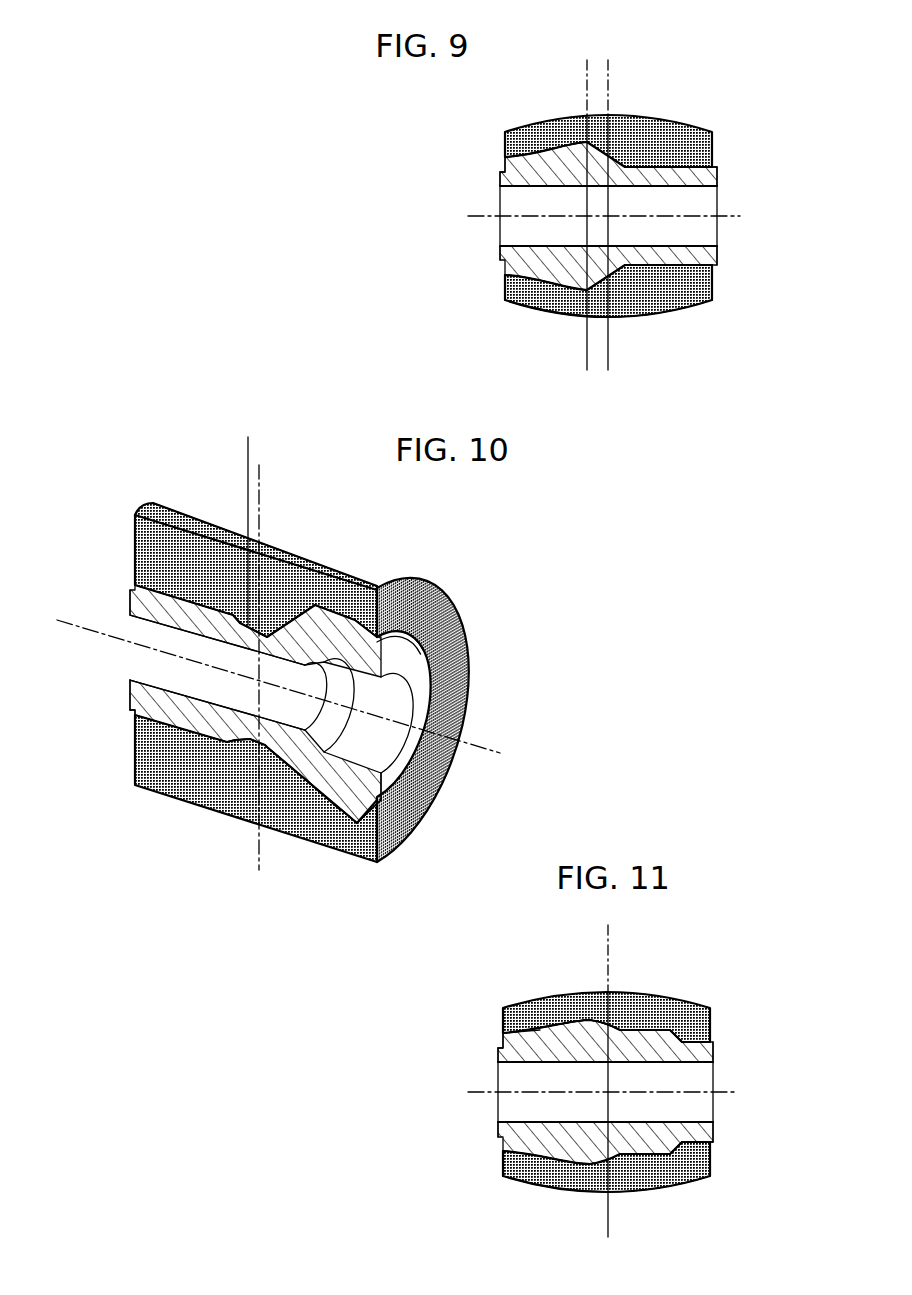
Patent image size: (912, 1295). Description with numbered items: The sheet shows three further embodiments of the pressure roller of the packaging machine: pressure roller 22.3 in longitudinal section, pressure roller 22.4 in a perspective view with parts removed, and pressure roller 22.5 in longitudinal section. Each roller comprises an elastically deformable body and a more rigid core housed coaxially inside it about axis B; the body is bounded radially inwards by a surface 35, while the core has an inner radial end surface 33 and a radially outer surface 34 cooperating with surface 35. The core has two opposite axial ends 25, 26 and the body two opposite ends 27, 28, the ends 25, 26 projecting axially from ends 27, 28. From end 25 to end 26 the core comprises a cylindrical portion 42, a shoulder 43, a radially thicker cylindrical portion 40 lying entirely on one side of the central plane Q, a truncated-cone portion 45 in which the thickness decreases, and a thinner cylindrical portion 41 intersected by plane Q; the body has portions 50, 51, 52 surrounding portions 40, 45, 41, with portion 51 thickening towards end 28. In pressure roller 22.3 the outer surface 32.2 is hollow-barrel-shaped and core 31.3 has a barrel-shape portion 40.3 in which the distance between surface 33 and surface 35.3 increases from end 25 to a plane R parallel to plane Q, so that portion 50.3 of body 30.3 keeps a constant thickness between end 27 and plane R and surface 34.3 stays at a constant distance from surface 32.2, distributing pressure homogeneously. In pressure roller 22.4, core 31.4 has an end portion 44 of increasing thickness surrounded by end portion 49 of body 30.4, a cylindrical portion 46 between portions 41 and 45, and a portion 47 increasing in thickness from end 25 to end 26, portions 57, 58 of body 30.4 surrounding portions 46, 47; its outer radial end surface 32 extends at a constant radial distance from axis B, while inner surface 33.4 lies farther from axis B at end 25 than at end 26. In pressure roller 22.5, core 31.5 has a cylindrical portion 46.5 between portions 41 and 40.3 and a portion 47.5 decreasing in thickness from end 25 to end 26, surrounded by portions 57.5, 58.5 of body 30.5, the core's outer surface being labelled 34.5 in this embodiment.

In FIG. 9, the pressure roller 22.3 is at (604, 216).
In FIG. 10, the pressure roller 22.4 is at (302, 660).
In FIG. 11, the pressure roller 22.5 is at (609, 1080).
In FIG. 9, the axial end of core 25 is at (477, 187).
In FIG. 10, the axial end of core 25 is at (389, 840).
In FIG. 11, the axial end of core 25 is at (477, 1062).
In FIG. 9, the axial end of core 26 is at (724, 172).
In FIG. 10, the axial end of core 26 is at (176, 738).
In FIG. 11, the axial end of core 26 is at (720, 1055).
In FIG. 9, the end of body 27 is at (495, 283).
In FIG. 10, the end of body 27 is at (399, 600).
In FIG. 11, the end of body 27 is at (495, 1162).
In FIG. 9, the end of body 28 is at (719, 283).
In FIG. 10, the end of body 28 is at (131, 550).
In FIG. 11, the end of body 28 is at (721, 1160).
In FIG. 9, the body 30.3 is at (698, 327).
In FIG. 10, the body 30.4 is at (308, 518).
In FIG. 11, the body 30.5 is at (731, 1197).
In FIG. 9, the core 31.3 is at (663, 168).
In FIG. 10, the core 31.4 is at (368, 834).
In FIG. 11, the core 31.5 is at (651, 1039).
In FIG. 10, the outer radial end surface 32 is at (176, 506).
In FIG. 9, the outer radial end surface 32.2 is at (618, 326).
In FIG. 11, the outer radial end surface 32.2 is at (556, 1209).
In FIG. 9, the inner radial end surface 33 is at (518, 240).
In FIG. 11, the inner radial end surface 33 is at (518, 1113).
In FIG. 10, the inner radial end surface 33.4 is at (412, 633).
In FIG. 10, the radially outer surface of core 34 is at (124, 697).
In FIG. 9, the radially outer surface of core 34.3 is at (553, 294).
In FIG. 11, the first outer ring portion 34.5 is at (565, 1011).
In FIG. 10, the radially inner surface of body 35 is at (157, 600).
In FIG. 9, the radially inner surface of body 35.3 is at (640, 251).
In FIG. 10, the core portion 40 is at (352, 636).
In FIG. 9, the barrel-shape portion of core 40.3 is at (542, 163).
In FIG. 11, the barrel-shape portion of core 40.3 is at (538, 1143).
In FIG. 9, the core portion 41 is at (638, 167).
In FIG. 10, the core portion 41 is at (193, 607).
In FIG. 11, the core portion 41 is at (692, 1134).
In FIG. 9, the cylindrical portion of core 42 is at (495, 177).
In FIG. 10, the cylindrical portion of core 42 is at (386, 796).
In FIG. 11, the cylindrical portion of core 42 is at (495, 1053).
In FIG. 9, the shoulder 43 is at (502, 160).
In FIG. 10, the shoulder 43 is at (339, 622).
In FIG. 11, the shoulder 43 is at (500, 1037).
In FIG. 10, the end portion of core 44 is at (217, 672).
In FIG. 9, the core portion 45 is at (590, 160).
In FIG. 10, the core portion 45 is at (284, 622).
In FIG. 11, the core portion 45 is at (665, 1140).
In FIG. 10, the cylindrical portion of core 46 is at (267, 628).
In FIG. 10, the core portion 47 is at (249, 517).
In FIG. 11, the core portion 47.5 is at (592, 1151).
In FIG. 11, the cylindrical portion of core 46.5 is at (640, 1143).
In FIG. 10, the end portion of body 49 is at (383, 849).
In FIG. 10, the body portion 50 is at (340, 835).
In FIG. 9, the body portion 50.3 is at (522, 298).
In FIG. 11, the body portion 50.3 is at (541, 1012).
In FIG. 9, the body portion 51 is at (598, 293).
In FIG. 10, the body portion 51 is at (293, 804).
In FIG. 11, the body portion 51 is at (688, 1026).
In FIG. 9, the body portion 52 is at (684, 284).
In FIG. 10, the body portion 52 is at (168, 759).
In FIG. 11, the body portion 52 is at (712, 1028).
In FIG. 10, the body portion 57 is at (264, 750).
In FIG. 11, the body portion 57.5 is at (597, 1011).
In FIG. 10, the body portion 58 is at (236, 741).
In FIG. 11, the body portion 58.5 is at (640, 1011).
In FIG. 9, the axis B is at (740, 216).
In FIG. 10, the axis B is at (500, 753).
In FIG. 11, the axis B is at (737, 1092).
In FIG. 9, the central plane Q is at (609, 60).
In FIG. 10, the central plane Q is at (261, 465).
In FIG. 11, the central plane Q is at (609, 926).
In FIG. 9, the plane R is at (586, 68).